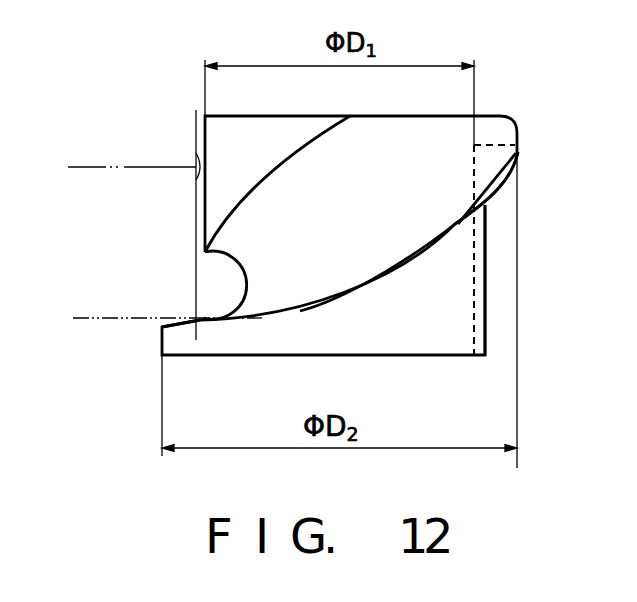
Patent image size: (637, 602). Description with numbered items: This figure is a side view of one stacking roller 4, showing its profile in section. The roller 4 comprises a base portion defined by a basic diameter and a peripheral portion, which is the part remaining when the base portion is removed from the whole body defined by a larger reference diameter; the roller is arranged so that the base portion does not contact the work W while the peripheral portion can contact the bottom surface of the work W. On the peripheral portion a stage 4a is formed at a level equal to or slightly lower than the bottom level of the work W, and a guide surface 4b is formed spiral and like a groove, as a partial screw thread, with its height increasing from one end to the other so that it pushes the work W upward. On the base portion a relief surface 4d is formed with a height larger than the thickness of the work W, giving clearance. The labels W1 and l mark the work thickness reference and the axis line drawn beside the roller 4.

The roller 4 is at (526, 130).
The stage 4a is at (196, 322).
The guide surface 4b is at (437, 211).
The relief surface 4d is at (470, 297).
The work W is at (93, 167).
The workpiece width W1 is at (197, 162).
The center line l is at (196, 121).